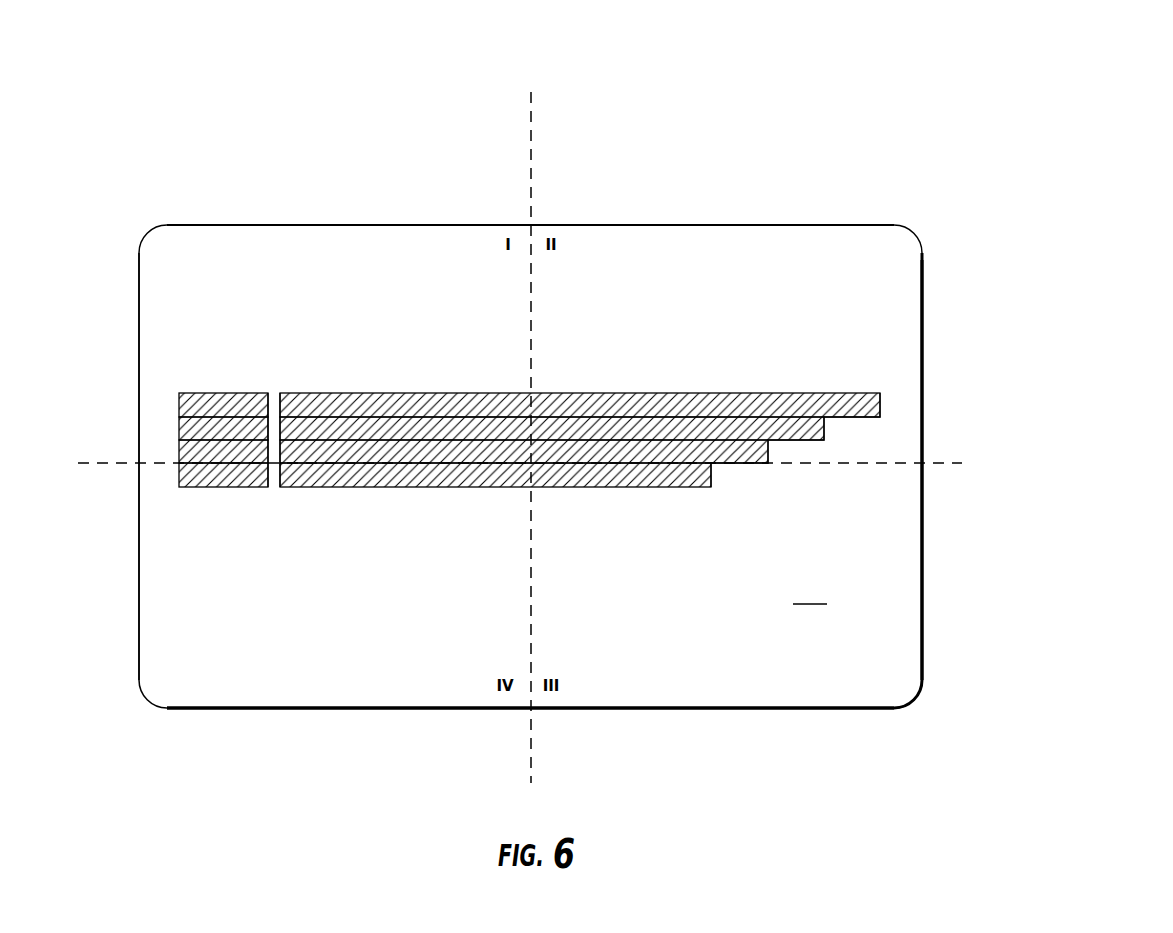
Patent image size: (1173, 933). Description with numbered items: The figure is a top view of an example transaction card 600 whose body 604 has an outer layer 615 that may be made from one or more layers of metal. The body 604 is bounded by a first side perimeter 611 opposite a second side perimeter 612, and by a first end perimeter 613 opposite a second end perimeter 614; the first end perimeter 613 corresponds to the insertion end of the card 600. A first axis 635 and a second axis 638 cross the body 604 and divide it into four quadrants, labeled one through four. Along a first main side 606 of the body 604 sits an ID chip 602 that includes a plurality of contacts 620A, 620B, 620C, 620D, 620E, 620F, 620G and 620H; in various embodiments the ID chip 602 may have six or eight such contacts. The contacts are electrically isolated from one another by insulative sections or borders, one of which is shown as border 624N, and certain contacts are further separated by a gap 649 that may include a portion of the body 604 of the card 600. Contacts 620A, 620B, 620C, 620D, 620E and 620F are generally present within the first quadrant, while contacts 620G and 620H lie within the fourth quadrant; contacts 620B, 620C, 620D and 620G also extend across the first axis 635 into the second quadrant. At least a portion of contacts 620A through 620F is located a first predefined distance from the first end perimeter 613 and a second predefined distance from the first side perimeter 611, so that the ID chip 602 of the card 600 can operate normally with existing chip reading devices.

The transaction card 600 is at (755, 110).
The ID chip 602 is at (476, 431).
The body 604 is at (848, 229).
The first main side 606 is at (380, 258).
The first side perimeter 611 is at (665, 225).
The second side perimeter 612 is at (660, 708).
The first end perimeter 613 is at (139, 620).
The second end perimeter 614 is at (922, 325).
The outer layer 615 is at (810, 591).
The contact 620A is at (233, 400).
The contact 620B is at (388, 398).
The contact 620C is at (462, 422).
The contact 620D is at (485, 455).
The contact 620E is at (188, 455).
The contact 620F is at (185, 425).
The contact 620G is at (380, 476).
The contact 620H is at (218, 477).
The insulative border 624N is at (630, 420).
The first axis 635 is at (531, 157).
The second axis 638 is at (942, 463).
The gap 649 is at (272, 397).